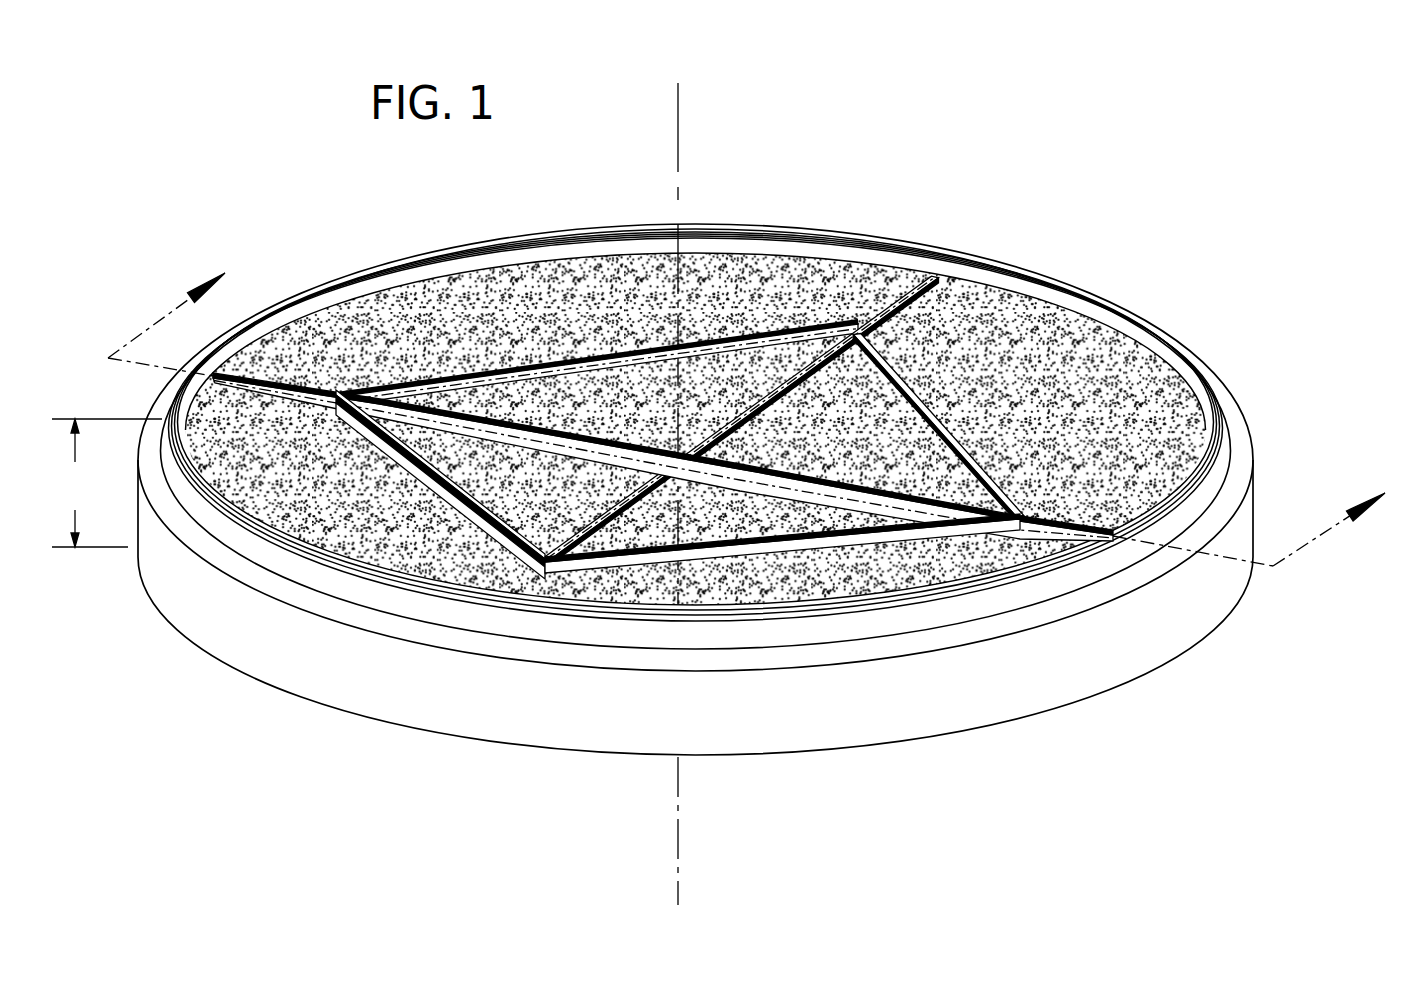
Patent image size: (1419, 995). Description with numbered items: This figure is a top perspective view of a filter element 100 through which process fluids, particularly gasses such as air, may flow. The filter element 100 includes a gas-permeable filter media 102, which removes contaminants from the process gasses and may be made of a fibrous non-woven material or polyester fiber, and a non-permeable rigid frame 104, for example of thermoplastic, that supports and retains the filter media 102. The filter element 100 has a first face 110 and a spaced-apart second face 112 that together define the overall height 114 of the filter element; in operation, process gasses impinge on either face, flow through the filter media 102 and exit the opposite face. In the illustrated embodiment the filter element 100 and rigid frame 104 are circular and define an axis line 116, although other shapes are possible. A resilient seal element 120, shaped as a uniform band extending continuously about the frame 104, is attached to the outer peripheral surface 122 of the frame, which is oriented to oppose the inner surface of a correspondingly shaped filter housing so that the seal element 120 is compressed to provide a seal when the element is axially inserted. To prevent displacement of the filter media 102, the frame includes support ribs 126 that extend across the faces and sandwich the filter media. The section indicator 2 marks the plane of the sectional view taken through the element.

The filter element 100 is at (240, 158).
The filter media 102 is at (556, 300).
The rigid frame 104 is at (1045, 283).
The first face 110 is at (750, 170).
The second face 112 is at (895, 785).
The overall height 114 is at (106, 483).
The axis line 116 is at (677, 128).
The resilient seal element 120 is at (1206, 600).
The outer peripheral surface 122 is at (1222, 463).
The support ribs 126 is at (925, 278).
The section line 2- 2 is at (758, 404).